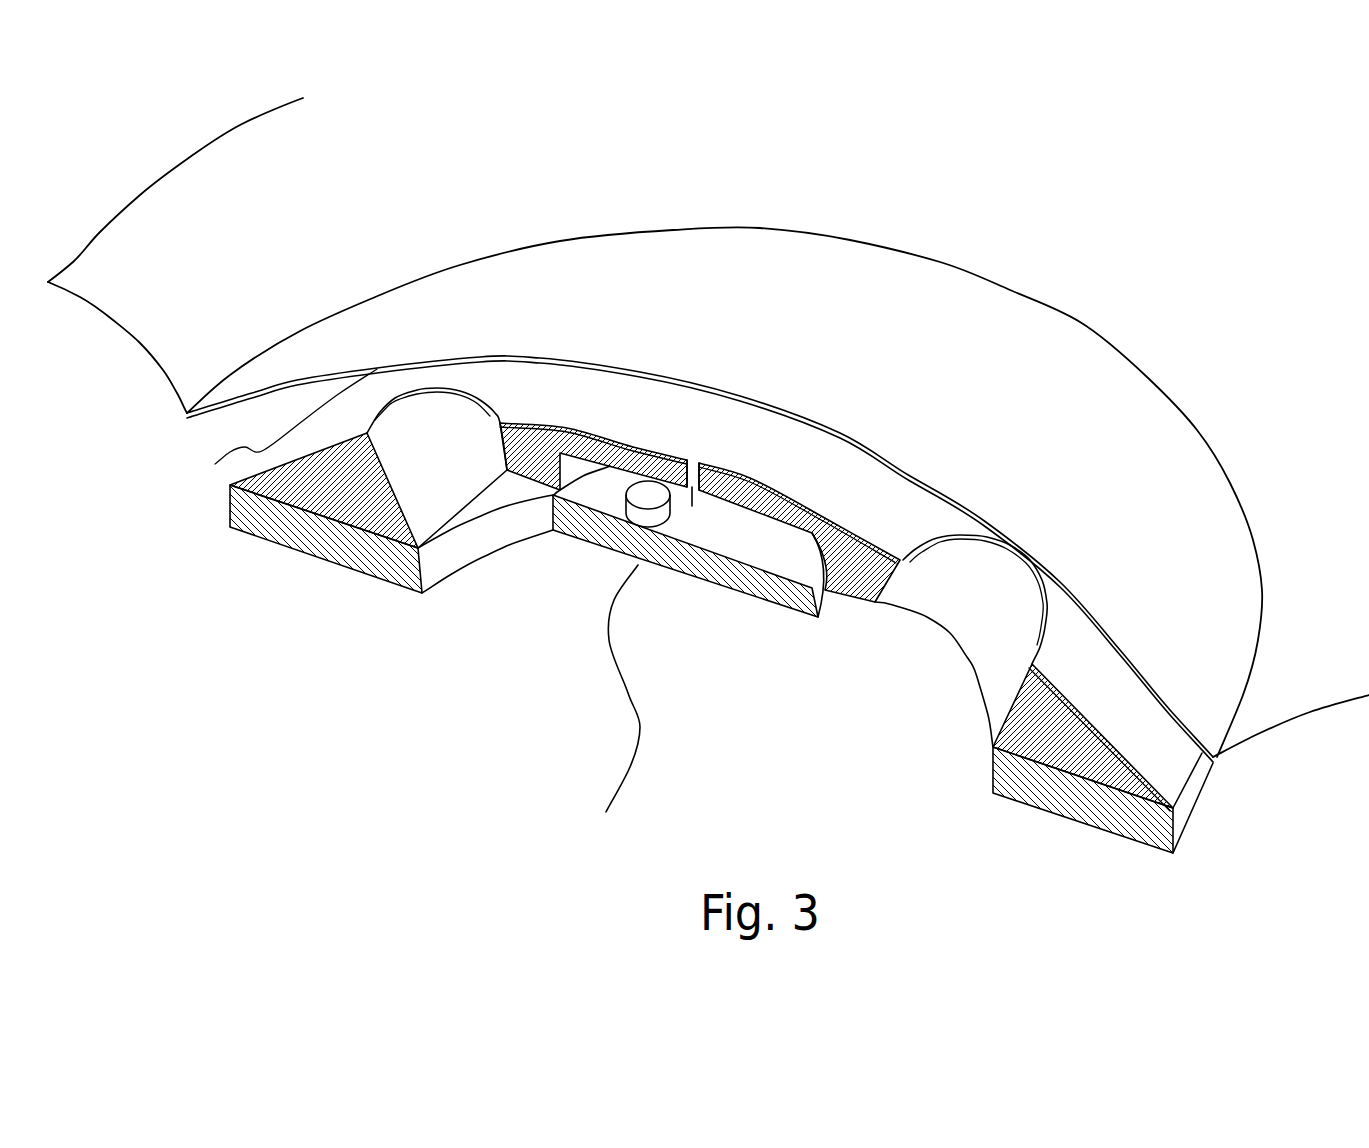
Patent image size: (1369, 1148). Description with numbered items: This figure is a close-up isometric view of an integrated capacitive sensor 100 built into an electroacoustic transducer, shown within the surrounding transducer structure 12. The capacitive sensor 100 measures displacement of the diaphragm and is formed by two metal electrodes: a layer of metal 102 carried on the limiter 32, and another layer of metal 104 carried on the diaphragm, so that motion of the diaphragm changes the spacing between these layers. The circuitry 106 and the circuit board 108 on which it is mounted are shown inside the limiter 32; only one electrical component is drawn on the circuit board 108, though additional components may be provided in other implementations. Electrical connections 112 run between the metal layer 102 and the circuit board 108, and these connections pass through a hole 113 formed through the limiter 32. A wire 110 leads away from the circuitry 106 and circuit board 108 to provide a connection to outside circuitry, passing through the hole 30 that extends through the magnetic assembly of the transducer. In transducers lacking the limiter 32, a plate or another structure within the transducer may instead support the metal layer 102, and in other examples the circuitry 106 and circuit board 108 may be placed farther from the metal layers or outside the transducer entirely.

The housing 12 is at (341, 240).
The hole 30 is at (508, 668).
The limiter 32 is at (873, 604).
The capacitive sensor 100 is at (254, 392).
The layer of metal 102 is at (605, 414).
The layer of metal 104 is at (647, 304).
The circuitry 106 is at (624, 517).
The circuit board 108 is at (780, 597).
The wire 110 is at (645, 723).
The electrical connections 112 is at (692, 507).
The hole 113 is at (699, 463).